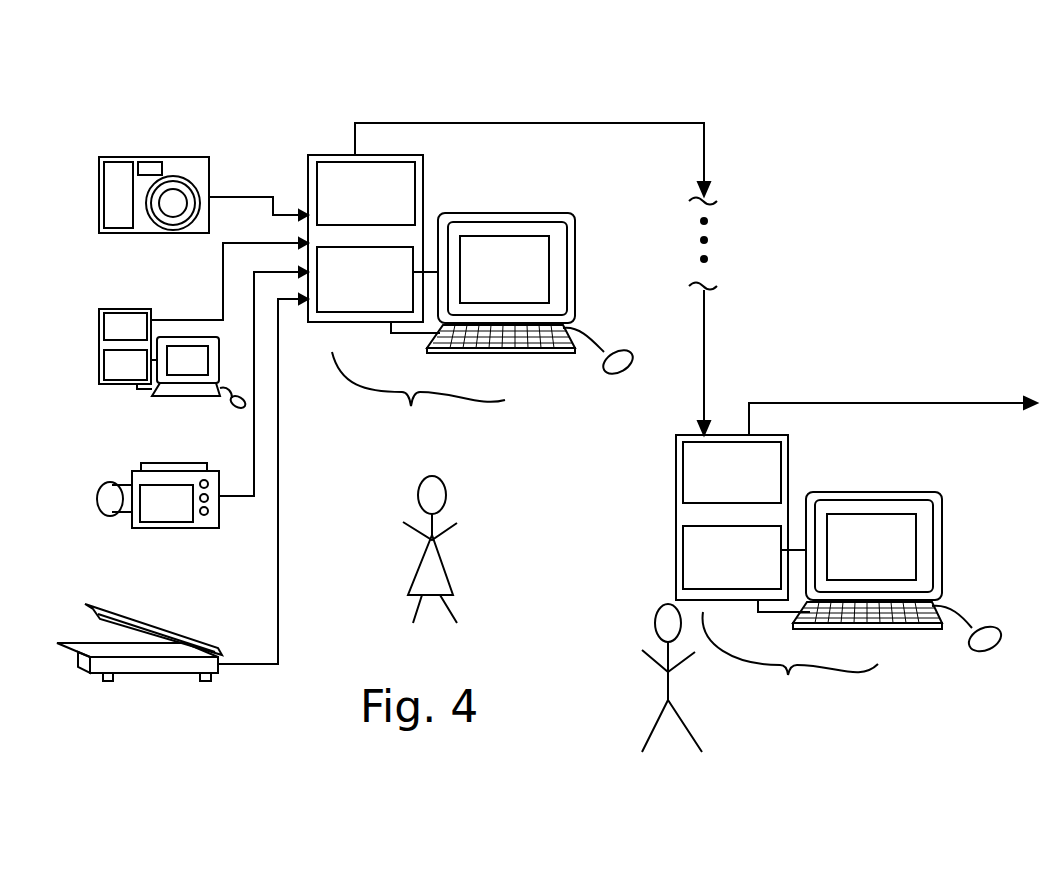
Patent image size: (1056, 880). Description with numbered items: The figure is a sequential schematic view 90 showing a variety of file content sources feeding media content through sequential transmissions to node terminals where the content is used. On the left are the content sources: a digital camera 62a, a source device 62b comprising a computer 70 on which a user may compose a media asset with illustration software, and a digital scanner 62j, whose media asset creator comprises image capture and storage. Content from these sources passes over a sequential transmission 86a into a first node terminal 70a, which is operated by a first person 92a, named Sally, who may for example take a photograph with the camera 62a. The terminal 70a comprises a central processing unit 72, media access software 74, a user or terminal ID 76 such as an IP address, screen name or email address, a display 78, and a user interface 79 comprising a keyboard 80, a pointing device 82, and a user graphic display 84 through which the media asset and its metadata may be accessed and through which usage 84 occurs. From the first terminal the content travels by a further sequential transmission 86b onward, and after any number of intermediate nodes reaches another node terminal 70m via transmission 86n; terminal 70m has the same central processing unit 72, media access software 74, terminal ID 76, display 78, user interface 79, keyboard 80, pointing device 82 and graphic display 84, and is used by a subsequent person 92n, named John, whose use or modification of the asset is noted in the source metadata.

The digital camera 62a is at (145, 157).
The source device 62b is at (125, 309).
The digital scanner 62j is at (181, 675).
The terminal 70 is at (110, 428).
The node terminal 70a is at (418, 411).
The node terminal 70m is at (790, 671).
The central processing unit 72 is at (308, 190).
The media access software 74 is at (380, 312).
The user or terminal ID 76 is at (415, 188).
The display 78 is at (575, 272).
The user interface 79 is at (562, 418).
The keyboard 80 is at (517, 353).
The mouse 82 is at (612, 371).
The usage 84 is at (528, 238).
The sequential transmission 86a is at (237, 172).
The sequential transmission 86b is at (620, 123).
The sequential transmission 86n is at (916, 403).
The sequential schematic view 90 is at (905, 203).
The first person 92a is at (442, 555).
The subsequent person 92n is at (660, 685).